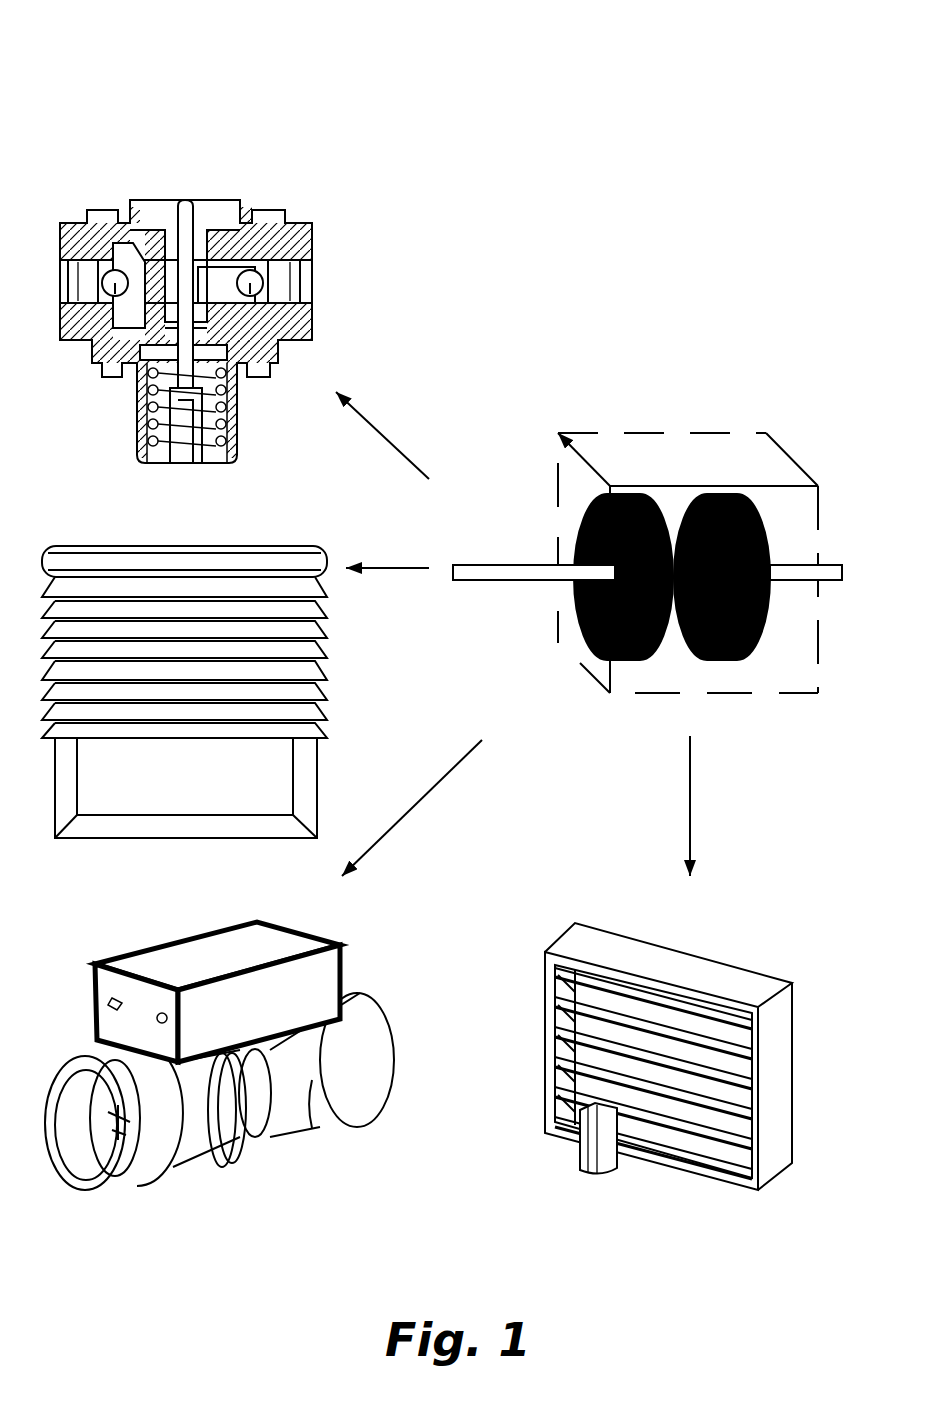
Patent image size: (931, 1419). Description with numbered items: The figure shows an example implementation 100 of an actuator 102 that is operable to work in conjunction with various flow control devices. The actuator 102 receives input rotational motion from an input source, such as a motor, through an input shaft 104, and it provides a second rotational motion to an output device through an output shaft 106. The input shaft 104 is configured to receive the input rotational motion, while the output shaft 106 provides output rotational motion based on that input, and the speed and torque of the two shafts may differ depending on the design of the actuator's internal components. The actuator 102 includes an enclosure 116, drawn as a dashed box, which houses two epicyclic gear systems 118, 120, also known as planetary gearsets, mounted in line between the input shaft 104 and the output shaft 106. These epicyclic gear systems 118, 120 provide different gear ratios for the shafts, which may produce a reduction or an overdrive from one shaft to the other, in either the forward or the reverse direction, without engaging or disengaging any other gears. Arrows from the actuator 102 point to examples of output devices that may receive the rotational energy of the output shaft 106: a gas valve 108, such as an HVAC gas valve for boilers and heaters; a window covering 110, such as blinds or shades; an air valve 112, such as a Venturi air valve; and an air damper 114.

The example implementation 100 is at (132, 77).
The actuator 102 is at (592, 385).
The input shaft 104 is at (800, 565).
The output shaft 106 is at (527, 565).
The gas valve 108 is at (167, 200).
The window covering 110 is at (172, 545).
The air valve 112 is at (163, 945).
The air damper 114 is at (620, 942).
The enclosure 116 is at (583, 432).
The epicyclic gear system 118 is at (634, 490).
The epicyclic gear system 120 is at (728, 488).